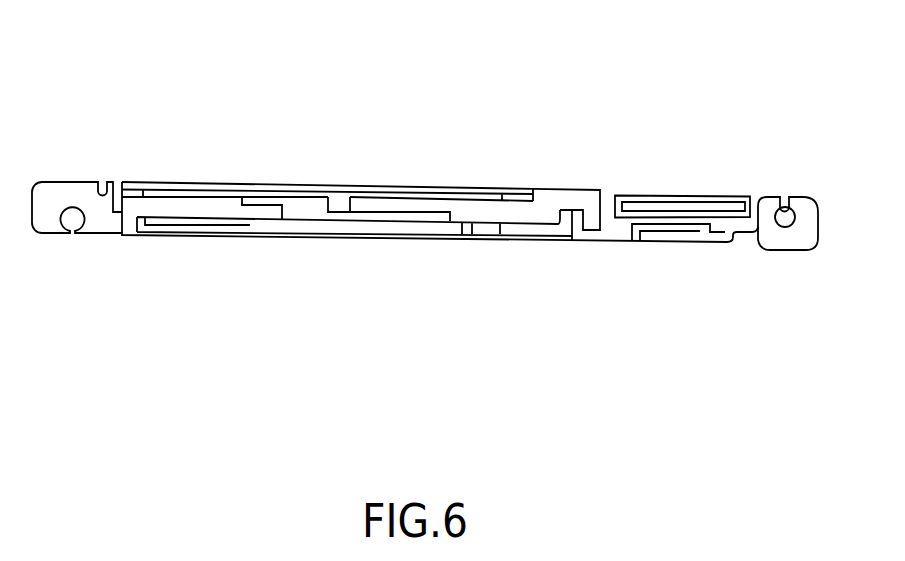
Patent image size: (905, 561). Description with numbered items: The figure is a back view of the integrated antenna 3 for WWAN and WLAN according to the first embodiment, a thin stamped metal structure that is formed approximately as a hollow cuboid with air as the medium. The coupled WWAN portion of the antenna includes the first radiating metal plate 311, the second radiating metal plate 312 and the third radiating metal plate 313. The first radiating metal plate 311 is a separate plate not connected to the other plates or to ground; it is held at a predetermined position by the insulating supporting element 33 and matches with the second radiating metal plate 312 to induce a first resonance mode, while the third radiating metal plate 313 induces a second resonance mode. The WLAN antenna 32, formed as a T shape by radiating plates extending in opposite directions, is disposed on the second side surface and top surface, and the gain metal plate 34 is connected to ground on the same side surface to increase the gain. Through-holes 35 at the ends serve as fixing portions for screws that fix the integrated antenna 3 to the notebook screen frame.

The integrated antenna 3 is at (442, 166).
The first radiating metal plate 311 is at (579, 190).
The second radiating metal plate 312 is at (346, 183).
The third radiating metal plate 313 is at (310, 205).
The WLAN antenna 32 is at (685, 242).
The supporting element 33 is at (560, 242).
The gain metal plate 34 is at (192, 205).
The through-holes 35 is at (788, 222).